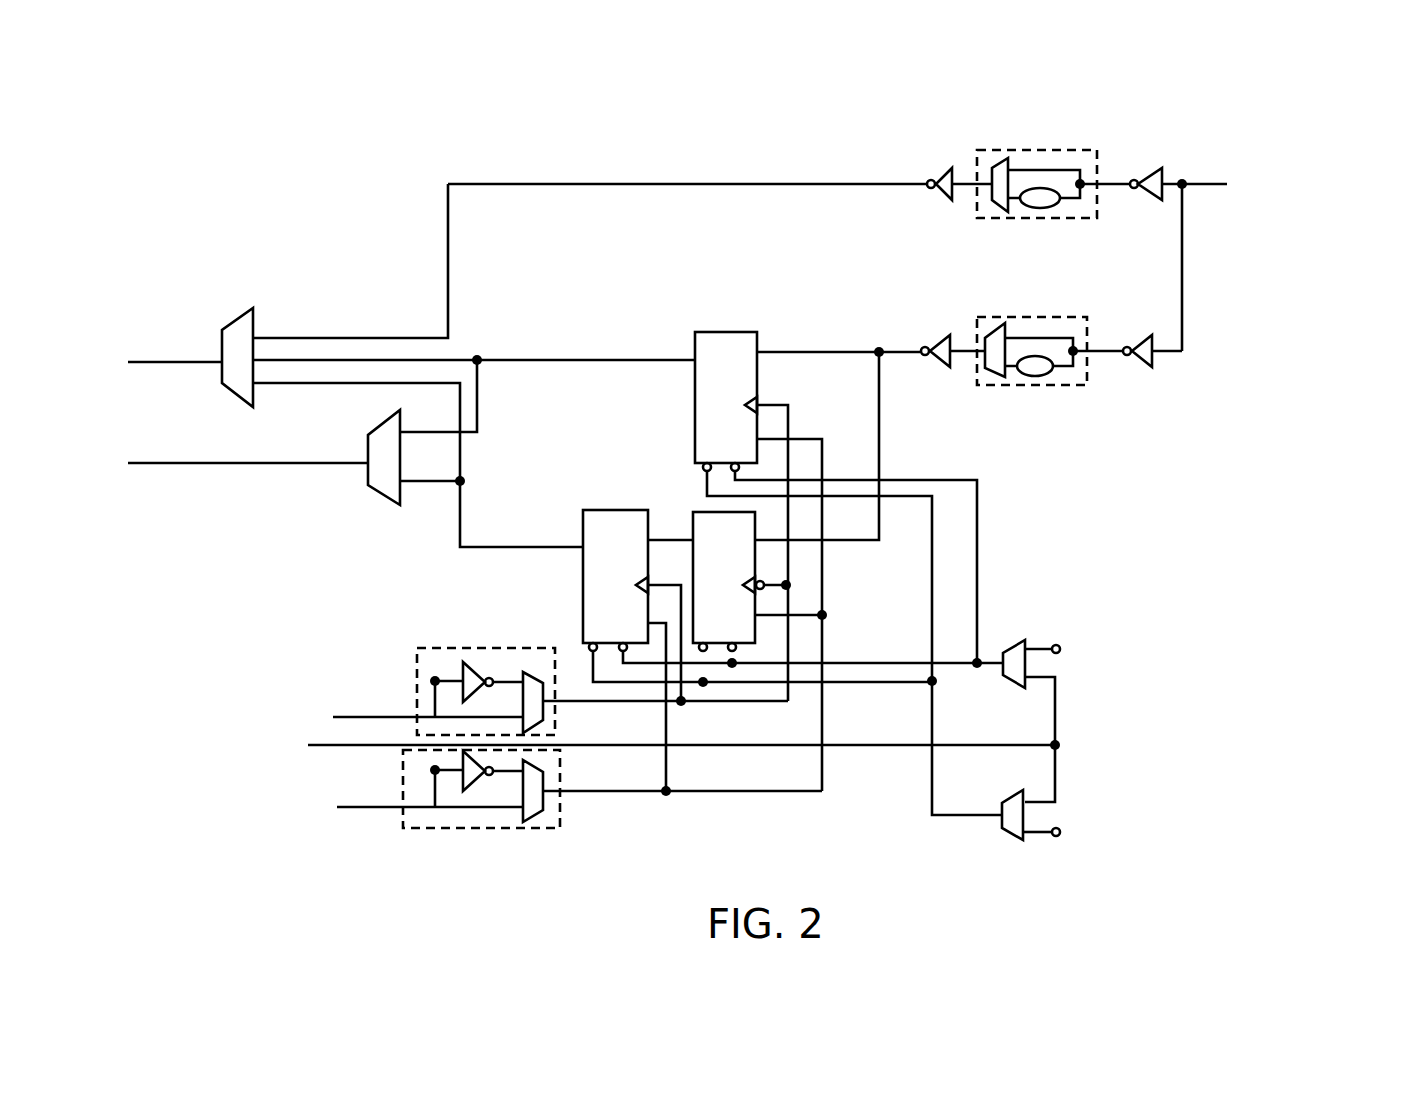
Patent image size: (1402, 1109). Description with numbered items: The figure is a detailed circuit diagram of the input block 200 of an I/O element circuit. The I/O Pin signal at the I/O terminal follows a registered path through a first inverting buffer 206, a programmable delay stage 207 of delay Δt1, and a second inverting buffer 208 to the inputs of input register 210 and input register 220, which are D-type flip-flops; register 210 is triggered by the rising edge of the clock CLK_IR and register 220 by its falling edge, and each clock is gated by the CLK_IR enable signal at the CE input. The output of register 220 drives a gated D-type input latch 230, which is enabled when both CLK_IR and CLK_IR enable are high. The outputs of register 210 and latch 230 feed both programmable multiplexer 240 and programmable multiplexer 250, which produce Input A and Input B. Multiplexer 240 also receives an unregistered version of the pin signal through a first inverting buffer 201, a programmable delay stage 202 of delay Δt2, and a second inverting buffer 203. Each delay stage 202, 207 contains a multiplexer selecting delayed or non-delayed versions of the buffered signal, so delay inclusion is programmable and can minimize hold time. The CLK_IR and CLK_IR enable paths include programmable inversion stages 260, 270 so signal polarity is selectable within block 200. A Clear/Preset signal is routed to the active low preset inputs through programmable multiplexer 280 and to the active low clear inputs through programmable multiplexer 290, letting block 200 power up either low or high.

The input block 200 is at (400, 914).
The first inverting buffer 201 is at (1160, 168).
The programmable delay stage 202 is at (1040, 150).
The second inverting buffer 203 is at (945, 172).
The first inverting buffer 206 is at (1142, 370).
The programmable delay stage 207 is at (1050, 386).
The second inverting buffer 208 is at (945, 369).
The input register 210 is at (715, 332).
The input register 220 is at (700, 513).
The input latch 230 is at (585, 512).
The programmable multiplexer 240 is at (232, 320).
The programmable multiplexer 250 is at (386, 497).
The programmable inversion stage 260 is at (428, 648).
The programmable inversion stage 270 is at (510, 828).
The programmable multiplexer 280 is at (1007, 651).
The programmable multiplexer 290 is at (1012, 841).